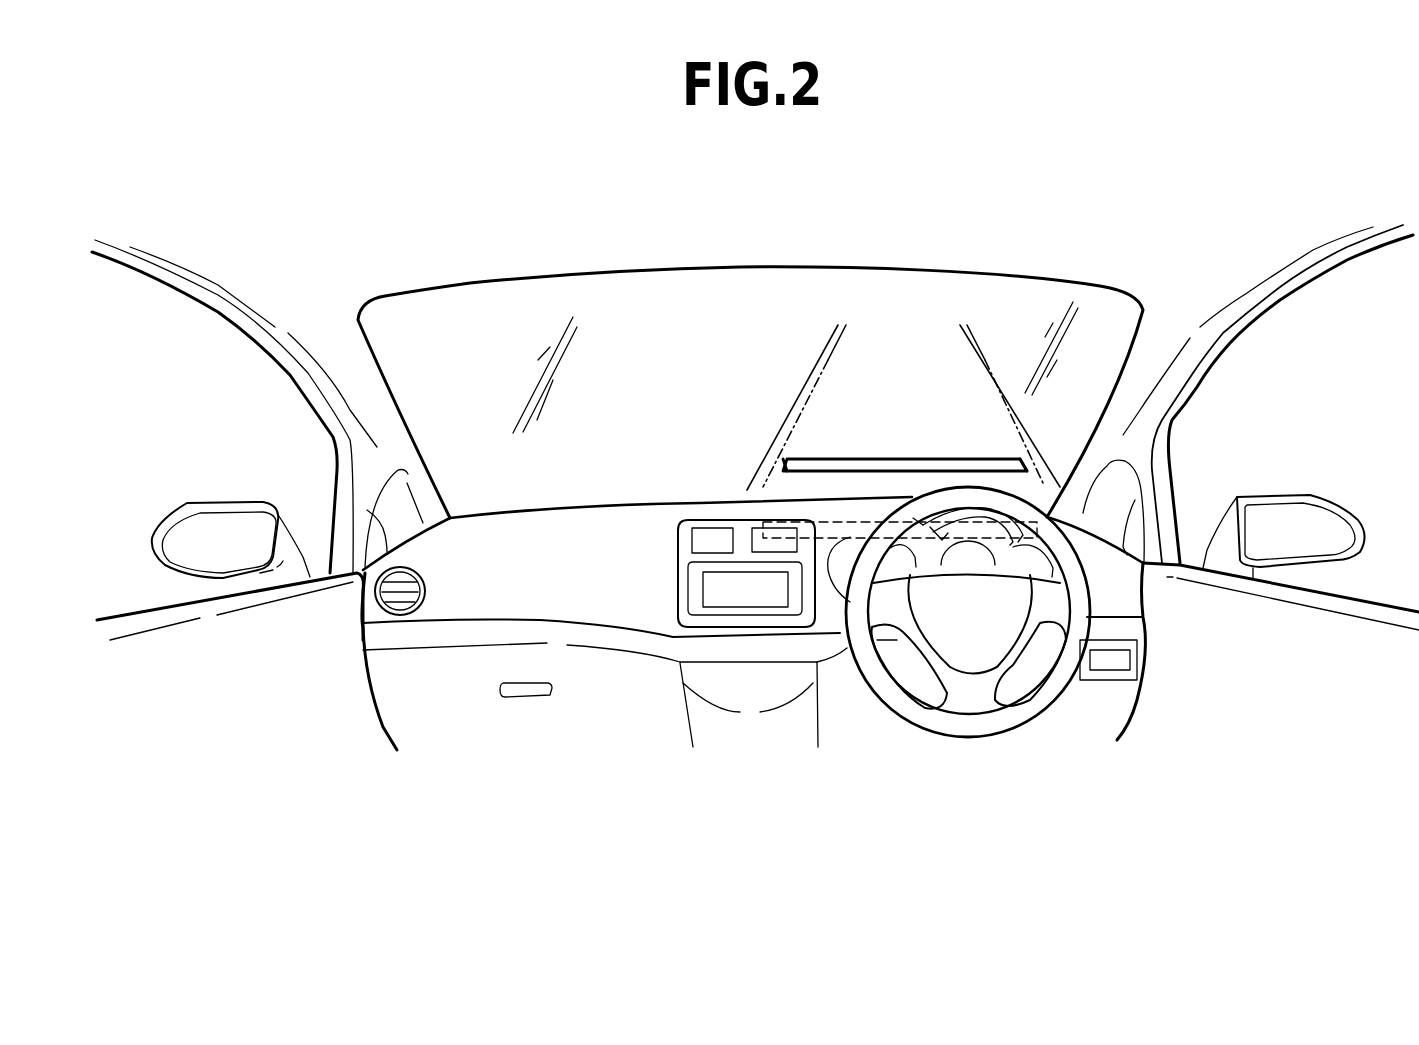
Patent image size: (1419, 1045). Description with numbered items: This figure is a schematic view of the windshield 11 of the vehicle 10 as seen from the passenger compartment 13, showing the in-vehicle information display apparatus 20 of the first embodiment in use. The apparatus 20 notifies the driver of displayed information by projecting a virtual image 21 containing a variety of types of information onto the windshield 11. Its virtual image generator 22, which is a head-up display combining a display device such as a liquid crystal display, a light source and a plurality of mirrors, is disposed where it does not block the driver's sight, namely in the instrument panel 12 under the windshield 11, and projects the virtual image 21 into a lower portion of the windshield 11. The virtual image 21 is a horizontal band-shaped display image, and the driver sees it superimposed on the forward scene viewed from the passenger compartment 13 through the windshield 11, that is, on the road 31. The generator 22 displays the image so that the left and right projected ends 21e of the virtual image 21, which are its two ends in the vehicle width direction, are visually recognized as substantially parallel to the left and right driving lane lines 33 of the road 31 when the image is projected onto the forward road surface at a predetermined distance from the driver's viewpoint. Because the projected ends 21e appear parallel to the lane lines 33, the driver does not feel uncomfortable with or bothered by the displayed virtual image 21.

The vehicle 10 is at (163, 260).
The windshield 11 is at (540, 312).
The instrument panel 12 is at (597, 530).
The passenger compartment 13 is at (620, 800).
The in-vehicle information display apparatus 20 is at (717, 492).
The virtual image 21 is at (890, 458).
The projected ends 21e is at (783, 467).
The virtual image generator 22 is at (822, 520).
The road 31 is at (937, 352).
The driving lane lines 33 is at (815, 366).